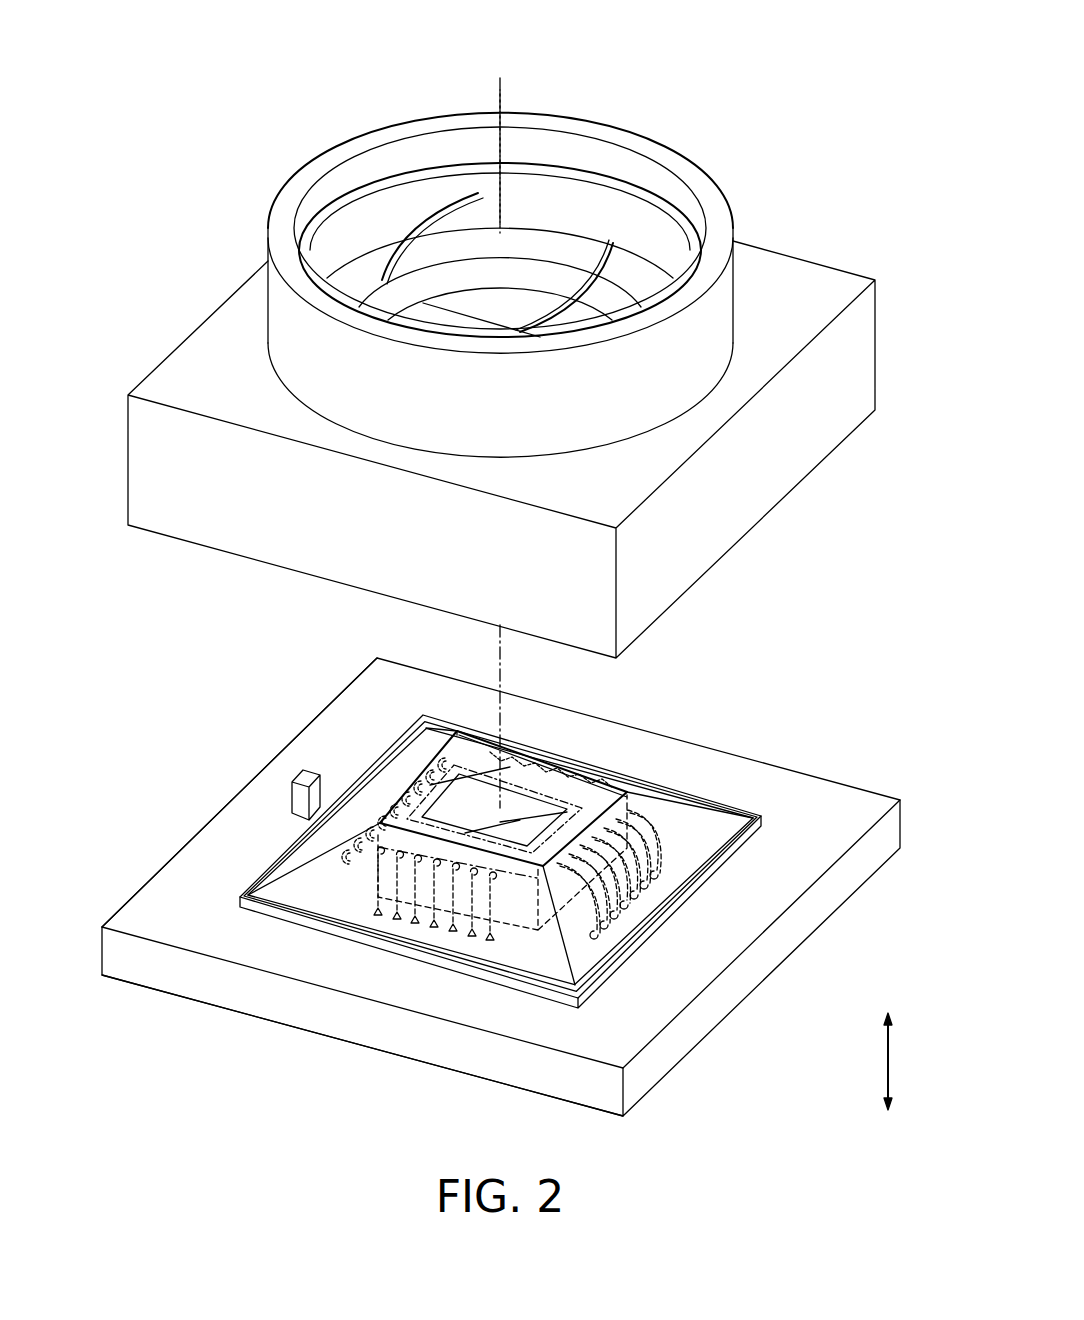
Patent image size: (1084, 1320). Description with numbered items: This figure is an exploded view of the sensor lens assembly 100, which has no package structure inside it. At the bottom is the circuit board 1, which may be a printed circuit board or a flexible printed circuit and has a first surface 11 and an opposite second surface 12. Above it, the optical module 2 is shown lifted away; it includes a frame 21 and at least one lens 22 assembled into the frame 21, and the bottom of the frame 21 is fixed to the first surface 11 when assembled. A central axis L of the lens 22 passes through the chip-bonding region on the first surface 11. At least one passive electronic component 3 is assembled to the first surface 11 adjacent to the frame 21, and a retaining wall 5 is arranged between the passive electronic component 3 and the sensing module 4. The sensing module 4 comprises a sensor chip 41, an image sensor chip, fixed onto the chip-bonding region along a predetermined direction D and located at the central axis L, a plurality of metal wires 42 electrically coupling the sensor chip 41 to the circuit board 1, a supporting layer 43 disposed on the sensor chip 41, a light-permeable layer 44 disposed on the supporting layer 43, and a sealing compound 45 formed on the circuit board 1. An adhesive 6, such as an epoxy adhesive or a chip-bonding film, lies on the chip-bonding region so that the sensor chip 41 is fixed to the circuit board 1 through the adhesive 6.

The sensor lens assembly 100 is at (786, 148).
The central axis L is at (503, 93).
The optical module 2 is at (573, 65).
The frame 21 is at (649, 145).
The lens 22 is at (601, 180).
The circuit board 1 is at (100, 954).
The first surface 11 is at (158, 912).
The second surface 12 is at (157, 993).
The passive electronic component 3 is at (287, 797).
The retaining wall 5 is at (386, 756).
The sensing module 4 is at (546, 758).
The sensor chip 41 is at (527, 920).
The metal wires 42 is at (653, 858).
The supporting layer 43 is at (372, 855).
The light-permeable layer 44 is at (583, 770).
The sealing compound 45 is at (680, 818).
The adhesive 6 is at (565, 910).
The predetermined direction D is at (873, 1061).